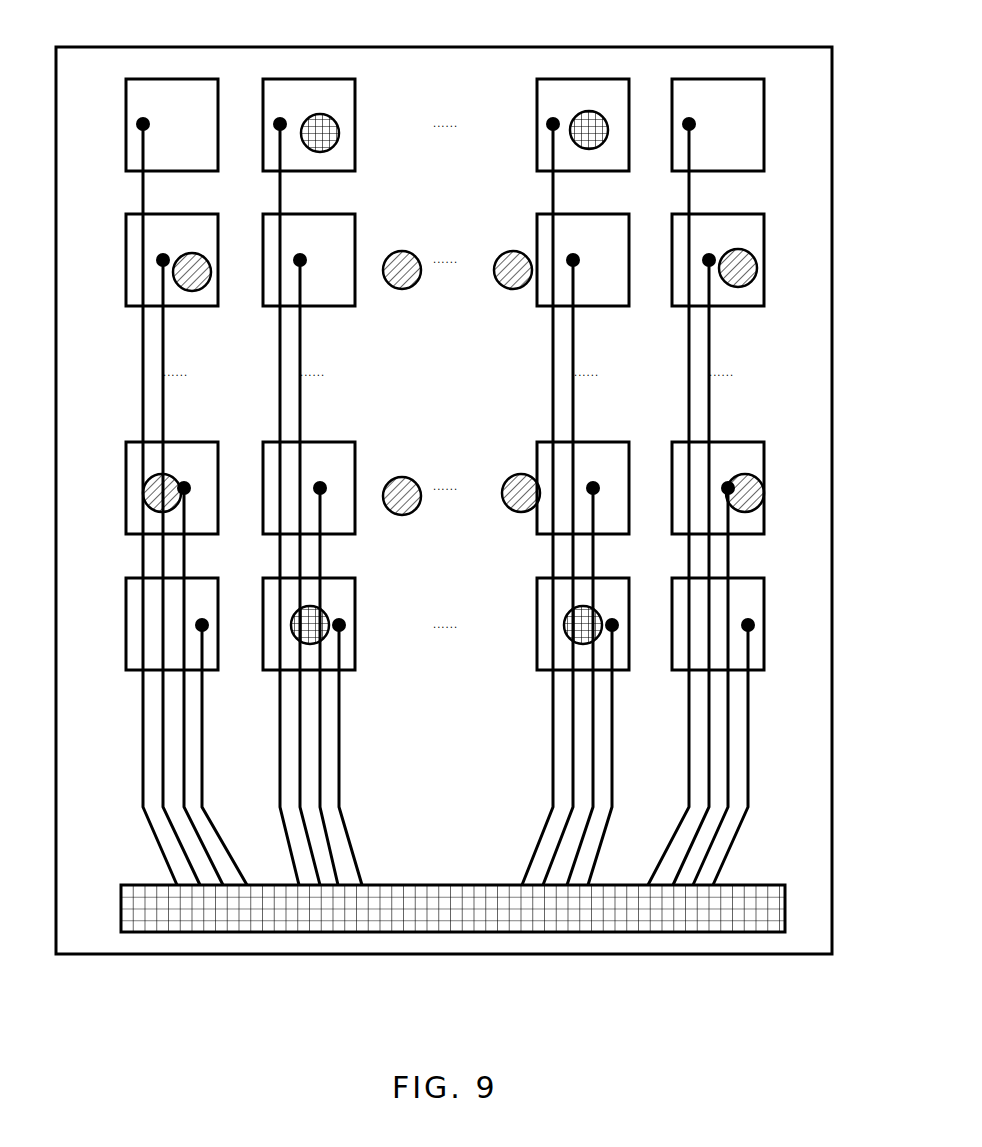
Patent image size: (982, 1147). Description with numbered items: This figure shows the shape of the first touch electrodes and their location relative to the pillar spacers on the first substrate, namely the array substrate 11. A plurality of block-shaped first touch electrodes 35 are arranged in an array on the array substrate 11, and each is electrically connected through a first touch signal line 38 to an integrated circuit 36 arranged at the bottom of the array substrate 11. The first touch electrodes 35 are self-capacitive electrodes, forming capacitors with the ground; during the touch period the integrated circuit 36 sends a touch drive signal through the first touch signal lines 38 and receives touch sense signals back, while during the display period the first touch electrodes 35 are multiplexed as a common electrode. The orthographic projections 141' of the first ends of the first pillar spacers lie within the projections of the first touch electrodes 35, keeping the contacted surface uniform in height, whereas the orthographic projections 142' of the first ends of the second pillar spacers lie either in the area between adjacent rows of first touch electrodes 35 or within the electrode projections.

The array substrate 11 is at (818, 45).
The first touch electrode 35 is at (337, 88).
The first touch signal line 38 is at (142, 777).
The orthographic projection of first end of first pillar spacer 141' is at (463, 326).
The orthographic projection of first end of second pillar spacer 142' is at (524, 366).
The integrated circuit 36 is at (121, 915).